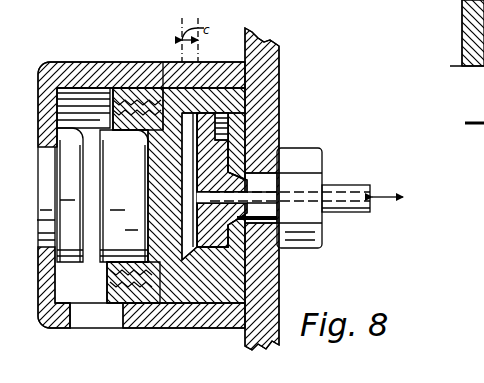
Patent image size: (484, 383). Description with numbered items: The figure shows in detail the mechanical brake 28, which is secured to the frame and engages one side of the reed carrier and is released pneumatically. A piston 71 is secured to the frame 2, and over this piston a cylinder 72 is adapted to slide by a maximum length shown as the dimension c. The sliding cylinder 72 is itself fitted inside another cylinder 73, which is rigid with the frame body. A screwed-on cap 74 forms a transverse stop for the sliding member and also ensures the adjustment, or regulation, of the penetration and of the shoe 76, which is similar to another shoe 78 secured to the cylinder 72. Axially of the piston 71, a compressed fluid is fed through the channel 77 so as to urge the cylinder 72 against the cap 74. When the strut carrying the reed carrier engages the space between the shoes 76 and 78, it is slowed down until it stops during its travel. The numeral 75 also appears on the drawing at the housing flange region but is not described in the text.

The frame 2 is at (270, 78).
The mechanical brake 28 is at (108, 50).
The piston 71 is at (230, 152).
The cylinder 72 is at (165, 64).
The cylinder 73 is at (184, 288).
The screwed-on cap 74 is at (114, 278).
The housing flange 75 is at (44, 278).
The shoe 76 is at (78, 199).
The channel 77 is at (250, 212).
The shoe 78 is at (130, 199).